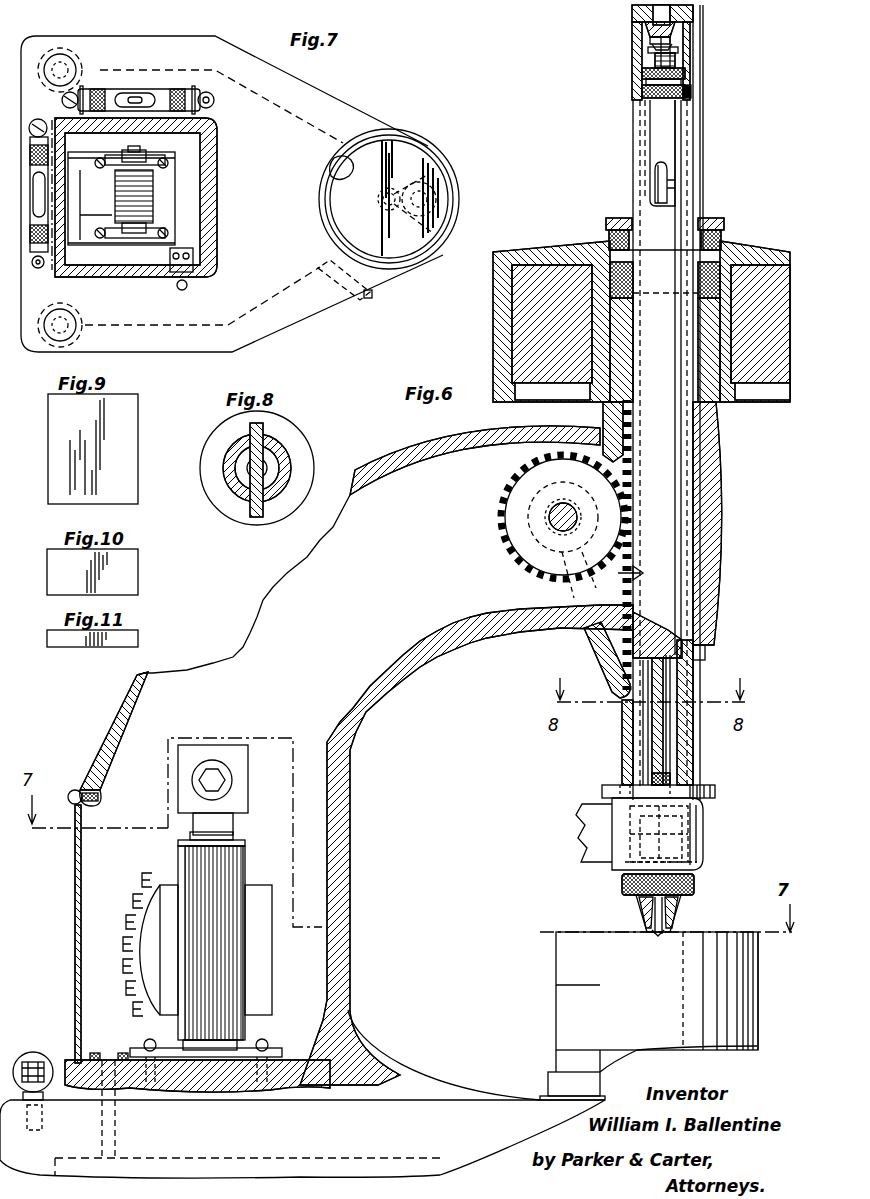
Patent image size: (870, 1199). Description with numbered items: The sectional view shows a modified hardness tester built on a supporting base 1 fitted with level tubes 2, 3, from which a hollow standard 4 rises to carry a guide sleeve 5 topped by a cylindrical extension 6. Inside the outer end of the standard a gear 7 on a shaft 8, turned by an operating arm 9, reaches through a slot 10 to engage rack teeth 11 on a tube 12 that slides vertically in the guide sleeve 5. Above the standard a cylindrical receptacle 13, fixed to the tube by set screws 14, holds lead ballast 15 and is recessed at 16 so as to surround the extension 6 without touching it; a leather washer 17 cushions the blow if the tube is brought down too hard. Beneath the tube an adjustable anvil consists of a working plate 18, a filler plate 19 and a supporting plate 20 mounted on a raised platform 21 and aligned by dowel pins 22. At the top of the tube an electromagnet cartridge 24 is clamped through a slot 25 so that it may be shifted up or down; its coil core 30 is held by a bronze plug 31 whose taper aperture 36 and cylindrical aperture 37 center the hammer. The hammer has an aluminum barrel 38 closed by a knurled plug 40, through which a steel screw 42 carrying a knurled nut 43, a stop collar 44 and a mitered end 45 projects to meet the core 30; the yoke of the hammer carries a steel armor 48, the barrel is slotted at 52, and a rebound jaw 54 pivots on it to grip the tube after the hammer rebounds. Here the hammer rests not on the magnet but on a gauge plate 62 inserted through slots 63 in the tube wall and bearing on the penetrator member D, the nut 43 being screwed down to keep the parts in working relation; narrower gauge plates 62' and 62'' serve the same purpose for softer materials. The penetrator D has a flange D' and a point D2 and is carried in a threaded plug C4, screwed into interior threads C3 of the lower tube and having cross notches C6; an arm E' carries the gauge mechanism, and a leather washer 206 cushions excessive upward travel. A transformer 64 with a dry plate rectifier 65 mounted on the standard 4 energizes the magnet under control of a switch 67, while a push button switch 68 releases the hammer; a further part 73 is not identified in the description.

In FIG. 7, the supporting base 1 is at (347, 103).
In FIG. 6, the supporting base 1 is at (413, 1105).
In FIG. 7, the level tube 2 is at (38, 268).
In FIG. 6, the level tube 2 is at (33, 1052).
In FIG. 7, the level tube 3 is at (130, 90).
In FIG. 7, the hollow standard 4 is at (118, 277).
In FIG. 6, the hollow standard 4 is at (370, 707).
In FIG. 6, the guide sleeve 5 is at (722, 470).
In FIG. 6, the cylindrical extension 6 is at (705, 390).
In FIG. 6, the gear 7 is at (515, 520).
In FIG. 6, the shaft 8 is at (550, 528).
In FIG. 6, the operating arm 9 is at (585, 645).
In FIG. 6, the slot 10 is at (622, 466).
In FIG. 6, the rack teeth 11 is at (642, 573).
In FIG. 6, the tube 12 is at (700, 152).
In FIG. 6, the cylindrical receptacle 13 is at (778, 256).
In FIG. 6, the set screws 14 is at (608, 228).
In FIG. 6, the ballast 15 is at (560, 268).
In FIG. 6, the recess 16 is at (718, 393).
In FIG. 6, the leather washer 17 is at (600, 250).
In FIG. 7, the working plate 18 is at (406, 158).
In FIG. 6, the working plate 18 is at (702, 932).
In FIG. 7, the filler plate 19 is at (333, 170).
In FIG. 6, the filler plate 19 is at (753, 1022).
In FIG. 7, the supporting plate 20 is at (403, 140).
In FIG. 6, the supporting plate 20 is at (558, 1080).
In FIG. 7, the raised platform 21 is at (382, 138).
In FIG. 6, the raised platform 21 is at (540, 1099).
In FIG. 7, the dowel pin 22 is at (382, 201).
In FIG. 6, the electromagnet cartridge 24 is at (690, 14).
In FIG. 6, the slot 25 is at (701, 25).
In FIG. 6, the core 30 is at (650, 15).
In FIG. 6, the bronze plug 31 is at (674, 37).
In FIG. 6, the taper aperture 36 is at (655, 50).
In FIG. 6, the cylindrical aperture 37 is at (647, 32).
In FIG. 6, the hammer barrel 38 is at (665, 110).
In FIG. 6, the knurled plug 40 is at (690, 94).
In FIG. 6, the steel screw 42 is at (677, 64).
In FIG. 6, the knurled nut 43 is at (643, 76).
In FIG. 6, the stop collar 44 is at (680, 52).
In FIG. 6, the mitered end 45 is at (652, 40).
In FIG. 6, the steel armor 48 is at (667, 190).
In FIG. 6, the slot 52 is at (668, 166).
In FIG. 6, the rebound jaw 54 is at (655, 176).
In FIG. 9, the gauge plate 62 is at (113, 449).
In FIG. 6, the gauge plate 62 is at (624, 721).
In FIG. 10, the gauge plate 62' is at (119, 571).
In FIG. 11, the gauge plate 62'' is at (119, 632).
In FIG. 6, the slots 63 is at (672, 748).
In FIG. 7, the transformer 64 is at (160, 193).
In FIG. 6, the transformer 64 is at (190, 900).
In FIG. 7, the dry plate rectifier 65 is at (150, 210).
In FIG. 6, the dry plate rectifier 65 is at (230, 760).
In FIG. 7, the switch 67 is at (182, 290).
In FIG. 7, the push button switch 68 is at (370, 292).
In FIG. 6, the inner wall 73 is at (648, 128).
In FIG. 6, the leather washer 206 is at (606, 790).
In FIG. 6, the penetrator member D is at (697, 772).
In FIG. 6, the flange D' is at (692, 827).
In FIG. 6, the point D2 is at (660, 935).
In FIG. 6, the arm E' is at (663, 840).
In FIG. 6, the interior threads C3 is at (697, 862).
In FIG. 6, the threaded plug C4 is at (695, 878).
In FIG. 6, the cross notches C6 is at (636, 930).